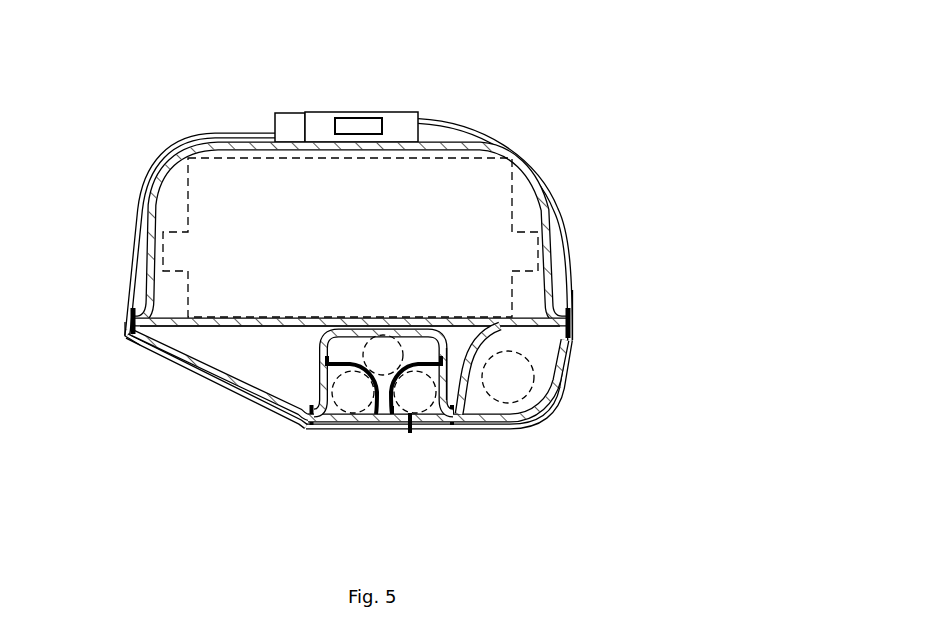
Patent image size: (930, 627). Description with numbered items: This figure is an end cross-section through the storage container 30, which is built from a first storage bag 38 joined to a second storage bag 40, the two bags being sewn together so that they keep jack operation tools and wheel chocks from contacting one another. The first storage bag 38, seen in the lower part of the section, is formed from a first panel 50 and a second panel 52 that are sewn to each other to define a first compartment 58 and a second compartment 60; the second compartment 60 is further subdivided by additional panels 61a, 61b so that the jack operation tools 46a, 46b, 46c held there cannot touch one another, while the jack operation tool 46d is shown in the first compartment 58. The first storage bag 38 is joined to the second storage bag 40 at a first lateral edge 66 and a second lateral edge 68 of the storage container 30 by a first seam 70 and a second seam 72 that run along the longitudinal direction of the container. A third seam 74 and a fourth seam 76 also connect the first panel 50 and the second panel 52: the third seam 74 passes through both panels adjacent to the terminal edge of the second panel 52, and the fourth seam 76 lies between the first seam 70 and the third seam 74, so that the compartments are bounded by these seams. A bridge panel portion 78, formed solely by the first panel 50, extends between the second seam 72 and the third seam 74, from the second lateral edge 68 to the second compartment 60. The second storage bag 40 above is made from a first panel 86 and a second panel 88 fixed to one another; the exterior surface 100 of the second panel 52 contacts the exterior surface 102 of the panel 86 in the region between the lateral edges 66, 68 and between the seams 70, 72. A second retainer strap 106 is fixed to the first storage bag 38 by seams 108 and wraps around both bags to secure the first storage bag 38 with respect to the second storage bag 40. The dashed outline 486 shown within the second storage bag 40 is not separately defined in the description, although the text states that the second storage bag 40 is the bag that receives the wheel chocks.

The storage container 30 is at (350, 268).
The first storage bag 38 is at (568, 393).
The second storage bag 40 is at (561, 244).
The jack operation tool 46a is at (355, 418).
The jack operation tool 46b is at (363, 358).
The jack operation tool 46c is at (427, 417).
The jack operation tool 46d is at (535, 360).
The first panel 50 is at (552, 397).
The second panel 52 is at (327, 362).
The first compartment 58 is at (493, 345).
The second compartment 60 is at (377, 333).
The additional panel 61a is at (393, 414).
The additional panel 61b is at (416, 364).
The first lateral edge 66 is at (578, 330).
The second lateral edge 68 is at (128, 325).
The first seam 70 is at (577, 335).
The second seam 72 is at (124, 338).
The third seam 74 is at (301, 428).
The fourth seam 76 is at (461, 420).
The bridge panel portion 78 is at (230, 384).
The first panel of second storage bag 86 is at (215, 325).
The second panel of second storage bag 88 is at (188, 143).
The exterior surface 100 is at (441, 332).
The exterior surface 102 is at (268, 325).
The second retainer strap 106 is at (537, 162).
The seams 108 is at (409, 433).
The electronic module 486 is at (514, 200).